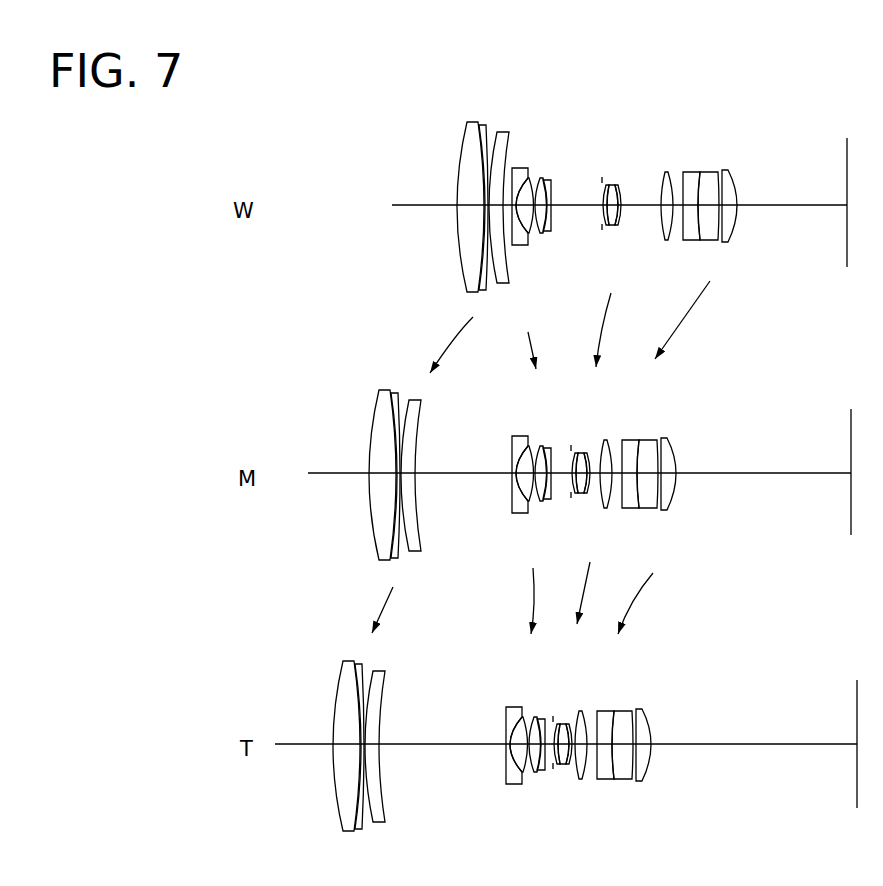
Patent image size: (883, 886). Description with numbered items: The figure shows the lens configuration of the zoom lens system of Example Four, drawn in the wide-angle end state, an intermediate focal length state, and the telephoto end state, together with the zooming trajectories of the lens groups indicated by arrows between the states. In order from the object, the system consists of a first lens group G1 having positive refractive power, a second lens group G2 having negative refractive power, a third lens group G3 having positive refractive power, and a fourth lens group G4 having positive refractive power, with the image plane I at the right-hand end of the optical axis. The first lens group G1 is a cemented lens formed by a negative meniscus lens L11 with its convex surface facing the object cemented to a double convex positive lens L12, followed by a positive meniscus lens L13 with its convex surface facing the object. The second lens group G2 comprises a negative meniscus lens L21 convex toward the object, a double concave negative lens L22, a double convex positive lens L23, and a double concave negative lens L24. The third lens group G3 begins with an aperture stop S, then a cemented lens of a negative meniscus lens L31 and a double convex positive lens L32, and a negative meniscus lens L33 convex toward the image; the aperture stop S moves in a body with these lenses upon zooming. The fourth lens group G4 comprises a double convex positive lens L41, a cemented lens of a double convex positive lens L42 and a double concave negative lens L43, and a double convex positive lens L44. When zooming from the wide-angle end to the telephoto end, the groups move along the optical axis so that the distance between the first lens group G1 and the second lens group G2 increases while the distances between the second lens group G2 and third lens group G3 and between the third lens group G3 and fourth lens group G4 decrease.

The first lens group G1 is at (515, 299).
The second lens group G2 is at (565, 263).
The third lens group G3 is at (627, 237).
The fourth lens group G4 is at (746, 245).
The negative meniscus lens L11 is at (467, 121).
The double convex positive lens L12 is at (479, 123).
The positive meniscus lens L13 is at (508, 130).
The negative meniscus lens L21 is at (518, 167).
The double concave negative lens L22 is at (533, 177).
The double convex positive lens L23 is at (542, 179).
The double concave negative lens L24 is at (550, 181).
The negative meniscus lens L31 is at (604, 185).
The double convex positive lens L32 is at (611, 186).
The negative meniscus lens L33 is at (619, 186).
The double convex positive lens L41 is at (665, 172).
The double convex positive lens L42 is at (690, 172).
The double concave negative lens L43 is at (712, 170).
The double convex positive lens L44 is at (732, 168).
The aperture stop S is at (600, 182).
The image plane I is at (846, 171).